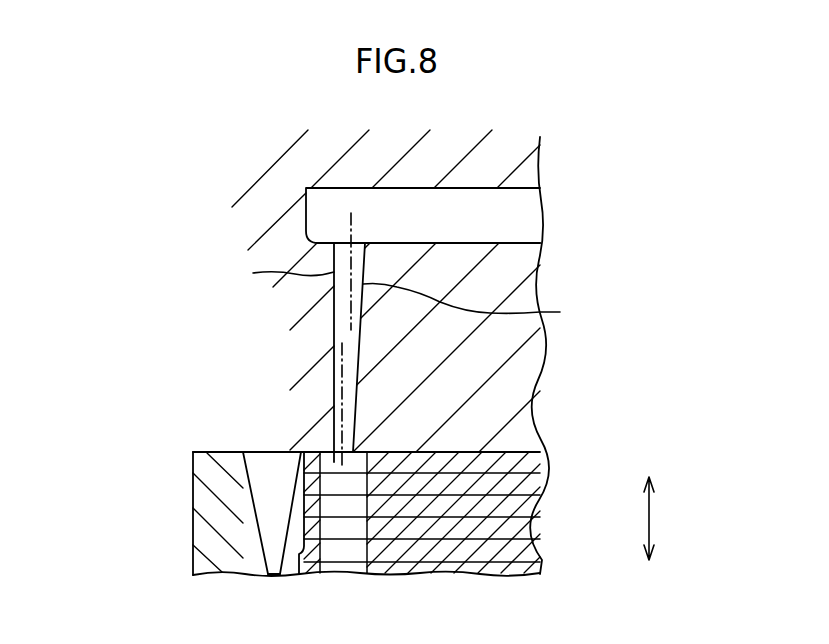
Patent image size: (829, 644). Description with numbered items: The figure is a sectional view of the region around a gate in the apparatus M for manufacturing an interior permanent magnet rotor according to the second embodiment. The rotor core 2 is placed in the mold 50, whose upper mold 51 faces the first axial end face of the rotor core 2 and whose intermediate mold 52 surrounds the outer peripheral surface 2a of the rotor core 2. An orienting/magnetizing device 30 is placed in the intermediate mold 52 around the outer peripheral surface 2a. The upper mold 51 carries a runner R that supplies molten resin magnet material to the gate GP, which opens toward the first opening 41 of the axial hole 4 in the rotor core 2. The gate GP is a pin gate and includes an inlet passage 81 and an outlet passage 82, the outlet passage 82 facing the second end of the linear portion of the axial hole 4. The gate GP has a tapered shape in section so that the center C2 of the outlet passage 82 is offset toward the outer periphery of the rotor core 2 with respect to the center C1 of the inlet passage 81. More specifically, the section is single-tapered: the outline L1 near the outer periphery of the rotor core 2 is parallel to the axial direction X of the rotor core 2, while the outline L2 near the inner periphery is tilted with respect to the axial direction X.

The runner R is at (470, 212).
The apparatus for manufacturing an IPM rotor M is at (578, 148).
The mold 50 is at (560, 281).
The upper mold 51 is at (556, 362).
The inlet passage 81 is at (337, 243).
The outlet passage 82 is at (334, 455).
The center of the inlet passage C1 is at (352, 224).
The center of the outlet passage C2 is at (342, 425).
The outline near the outer periphery L1 is at (274, 275).
The outline near the inner periphery L2 is at (478, 306).
The gate GP is at (323, 342).
The first opening 41 is at (327, 452).
The intermediate mold 52 is at (210, 499).
The orienting/magnetizing device 30 is at (252, 536).
The rotor core 2 is at (559, 502).
The outer peripheral surface 2a is at (299, 569).
The axial hole 4 is at (320, 567).
The axial direction X is at (650, 514).